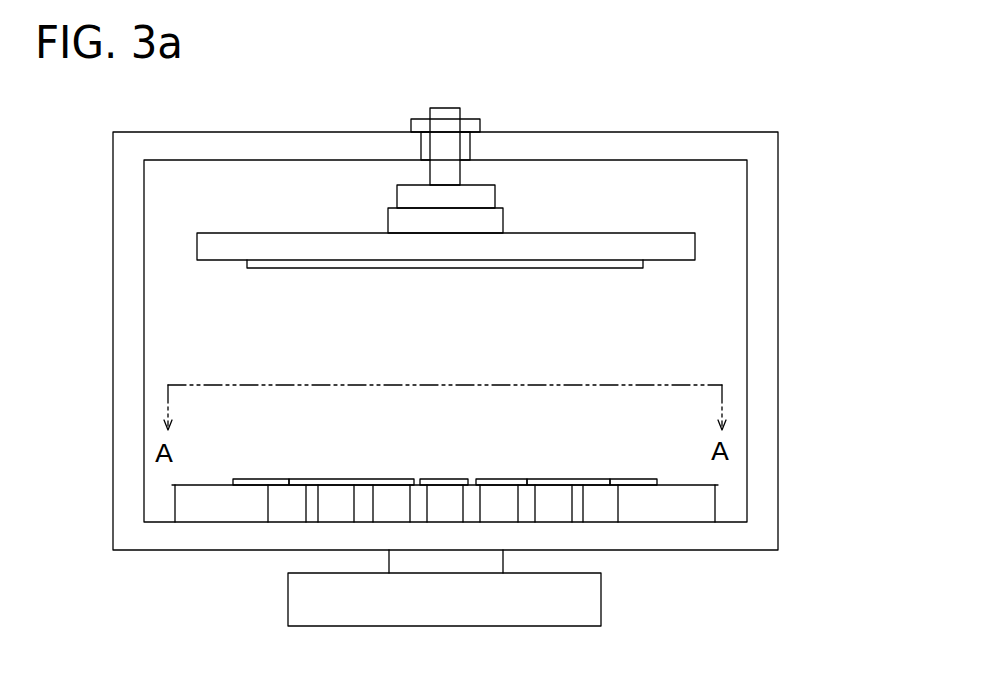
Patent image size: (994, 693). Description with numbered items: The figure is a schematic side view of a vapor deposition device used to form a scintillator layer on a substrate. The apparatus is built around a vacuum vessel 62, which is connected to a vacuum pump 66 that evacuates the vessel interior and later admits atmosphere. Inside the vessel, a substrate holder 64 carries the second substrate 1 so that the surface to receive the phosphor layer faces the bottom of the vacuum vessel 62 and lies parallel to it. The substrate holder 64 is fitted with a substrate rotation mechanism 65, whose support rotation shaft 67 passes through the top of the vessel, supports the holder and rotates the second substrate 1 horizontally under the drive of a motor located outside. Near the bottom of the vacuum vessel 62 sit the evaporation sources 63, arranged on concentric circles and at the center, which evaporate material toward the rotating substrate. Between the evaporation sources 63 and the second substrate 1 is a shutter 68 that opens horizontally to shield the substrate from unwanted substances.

The second substrate 1 is at (605, 270).
The vacuum vessel 62 is at (765, 196).
The evaporation source 63 is at (547, 477).
The substrate holder 64 is at (668, 242).
The substrate rotation mechanism 65 is at (493, 226).
The vacuum pump 66 is at (588, 602).
The support rotation shaft 67 is at (445, 107).
The shielding plate (shutter) 68 is at (240, 477).